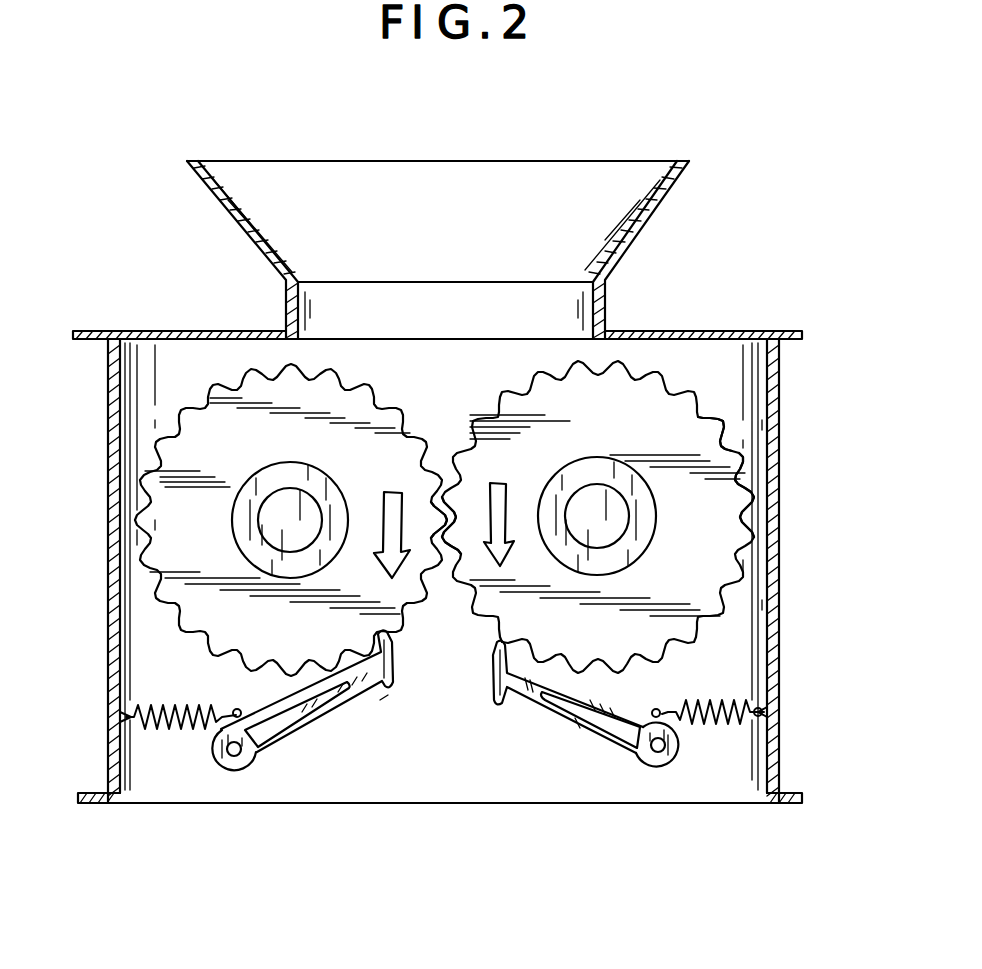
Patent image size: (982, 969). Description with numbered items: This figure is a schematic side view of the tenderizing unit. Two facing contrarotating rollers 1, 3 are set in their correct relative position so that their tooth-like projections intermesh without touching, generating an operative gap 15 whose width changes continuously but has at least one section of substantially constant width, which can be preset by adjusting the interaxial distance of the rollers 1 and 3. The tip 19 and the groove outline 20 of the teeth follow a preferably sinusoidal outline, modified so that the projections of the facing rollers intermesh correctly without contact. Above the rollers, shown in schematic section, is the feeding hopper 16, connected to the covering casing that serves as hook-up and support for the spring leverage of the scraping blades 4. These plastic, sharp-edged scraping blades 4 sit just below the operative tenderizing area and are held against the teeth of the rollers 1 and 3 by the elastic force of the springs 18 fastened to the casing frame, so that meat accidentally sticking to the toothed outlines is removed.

The contrarotating roller 1 is at (155, 558).
The contrarotating roller 3 is at (695, 577).
The scraping blades 4 is at (270, 752).
The operative gap 15 is at (443, 540).
The feeding hopper 16 is at (620, 253).
The springs 18 is at (174, 730).
The tooth tip 19 is at (757, 530).
The tooth groove outline 20 is at (722, 440).